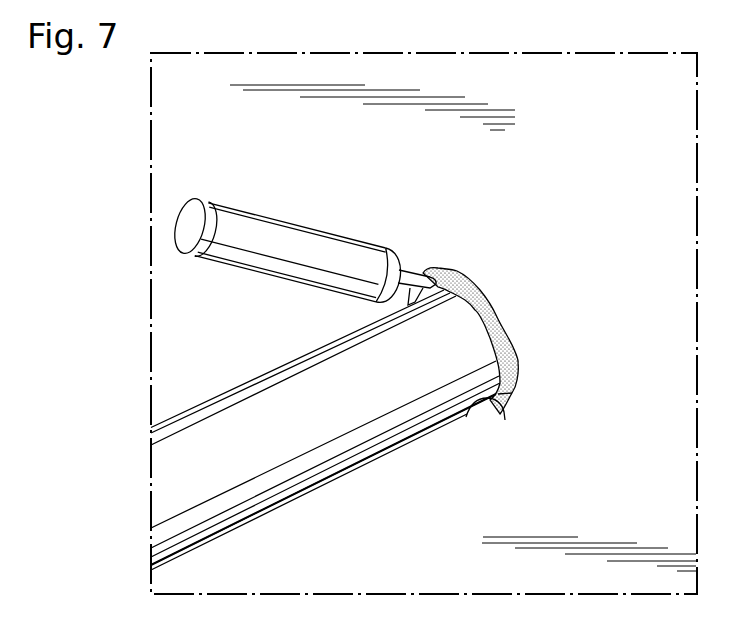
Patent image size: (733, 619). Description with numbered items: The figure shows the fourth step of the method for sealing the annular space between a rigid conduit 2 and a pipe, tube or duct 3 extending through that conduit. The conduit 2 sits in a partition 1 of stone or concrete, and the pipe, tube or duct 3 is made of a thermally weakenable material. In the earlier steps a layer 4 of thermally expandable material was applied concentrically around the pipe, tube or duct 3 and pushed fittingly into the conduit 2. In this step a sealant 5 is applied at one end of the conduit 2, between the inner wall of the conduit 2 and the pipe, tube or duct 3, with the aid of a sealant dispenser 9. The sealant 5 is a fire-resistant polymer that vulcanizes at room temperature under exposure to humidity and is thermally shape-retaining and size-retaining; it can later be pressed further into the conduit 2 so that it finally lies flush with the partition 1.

The partition 1 is at (612, 156).
The conduit 2 is at (473, 412).
The pipe, tube or duct 3 is at (278, 472).
The layer of thermally expandable material 4 is at (495, 412).
The sealant 5 is at (497, 318).
The sealant dispenser 9 is at (262, 235).